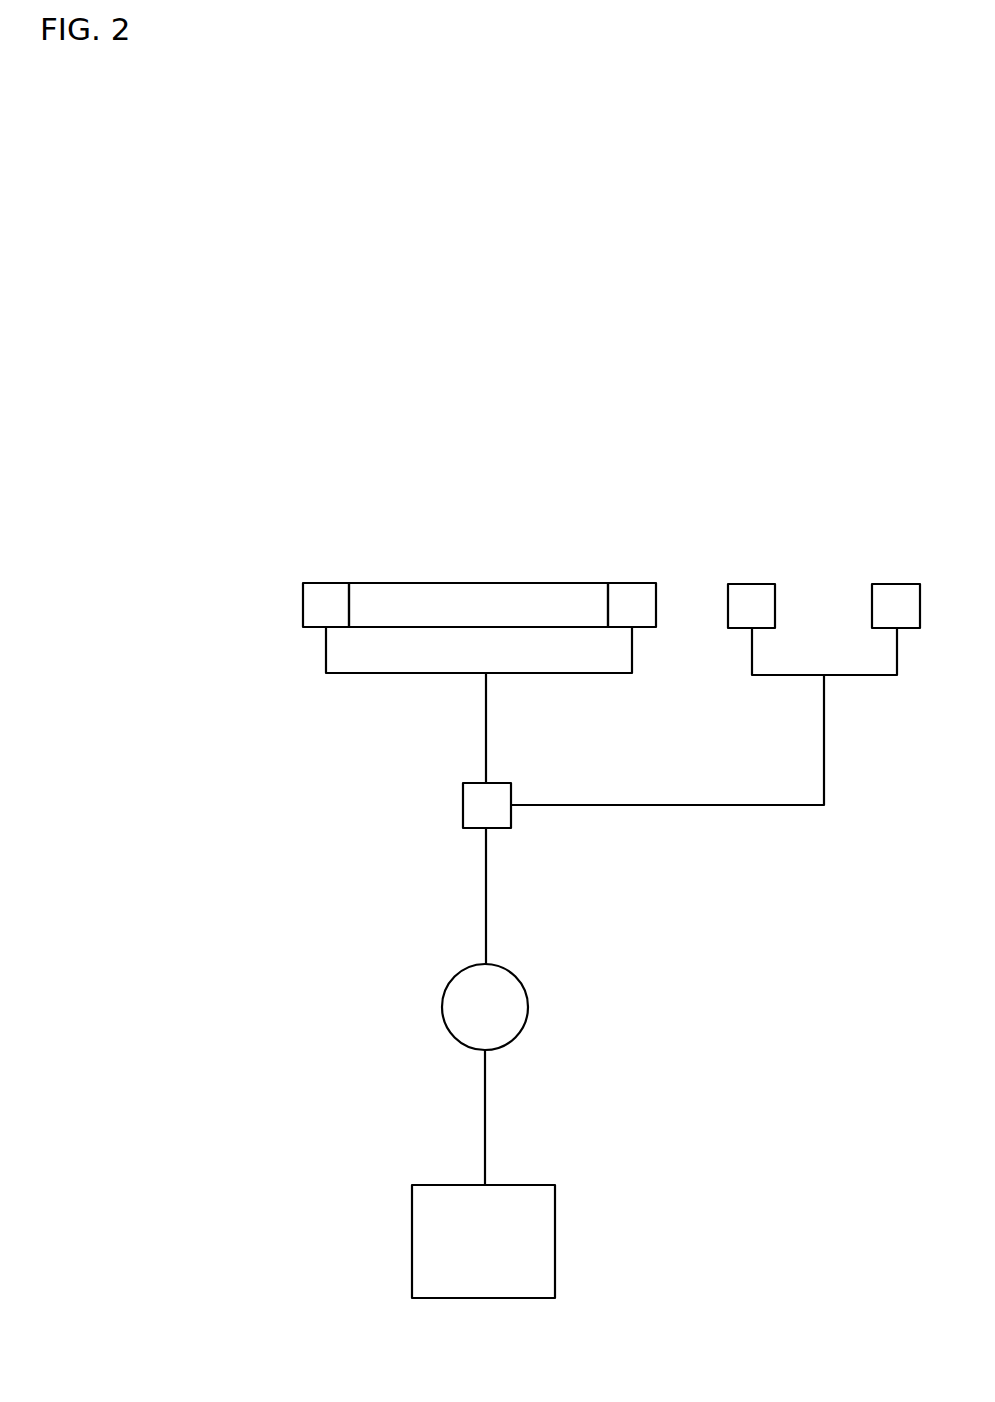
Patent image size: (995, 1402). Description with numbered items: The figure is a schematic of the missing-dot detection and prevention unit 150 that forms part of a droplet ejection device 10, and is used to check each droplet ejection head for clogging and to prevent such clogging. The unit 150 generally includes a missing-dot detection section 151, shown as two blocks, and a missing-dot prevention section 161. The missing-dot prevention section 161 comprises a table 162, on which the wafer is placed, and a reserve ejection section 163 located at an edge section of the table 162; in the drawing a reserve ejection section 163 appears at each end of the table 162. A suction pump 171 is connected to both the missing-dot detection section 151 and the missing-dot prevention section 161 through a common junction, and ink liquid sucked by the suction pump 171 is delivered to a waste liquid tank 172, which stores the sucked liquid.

The droplet ejection device 10 is at (798, 176).
The missing-dot detection and prevention unit 150 is at (623, 303).
The missing-dot detection section 151 is at (753, 584).
The missing-dot prevention section 161 is at (427, 425).
The table 162 is at (487, 583).
The reserve ejection section 163 is at (329, 583).
The suction pump 171 is at (529, 1008).
The waste liquid tank 172 is at (555, 1245).